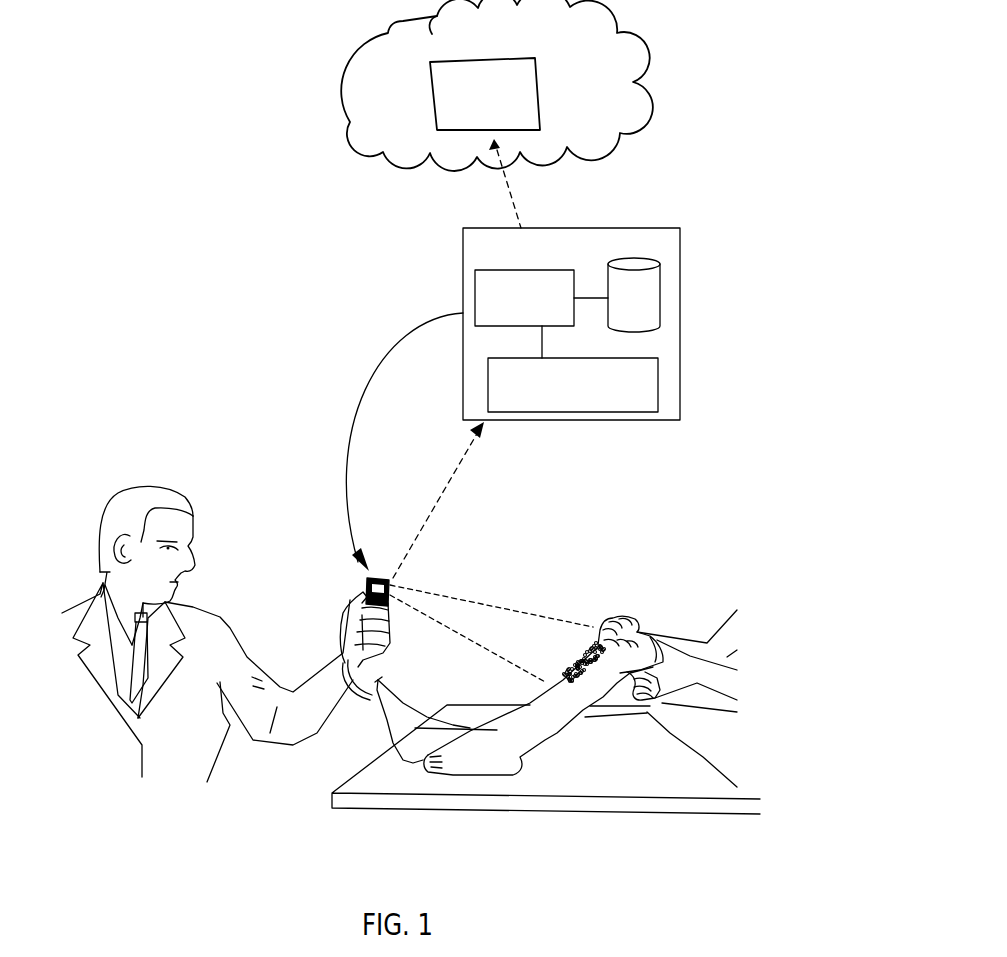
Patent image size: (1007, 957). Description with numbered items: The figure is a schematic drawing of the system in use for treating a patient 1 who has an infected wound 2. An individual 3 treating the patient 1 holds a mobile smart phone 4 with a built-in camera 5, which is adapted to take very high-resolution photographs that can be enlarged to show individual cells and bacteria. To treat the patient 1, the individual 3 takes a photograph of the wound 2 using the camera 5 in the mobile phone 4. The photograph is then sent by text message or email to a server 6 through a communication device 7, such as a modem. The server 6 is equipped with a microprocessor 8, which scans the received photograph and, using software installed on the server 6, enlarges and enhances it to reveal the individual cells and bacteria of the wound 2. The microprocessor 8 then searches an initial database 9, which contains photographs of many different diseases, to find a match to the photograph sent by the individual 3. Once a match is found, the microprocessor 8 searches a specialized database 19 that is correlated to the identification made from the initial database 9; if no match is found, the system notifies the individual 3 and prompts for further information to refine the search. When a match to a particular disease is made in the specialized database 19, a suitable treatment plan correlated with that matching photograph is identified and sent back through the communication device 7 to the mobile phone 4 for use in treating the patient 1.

The patient 1 is at (668, 628).
The infected wound 2 is at (578, 656).
The individual 3 is at (172, 484).
The mobile smart phone 4 is at (355, 563).
The camera 5 is at (373, 580).
The server 6 is at (578, 317).
The communication device 7 is at (625, 400).
The microprocessor 8 is at (486, 280).
The initial database 9 is at (652, 272).
The specialized database 19 is at (537, 81).